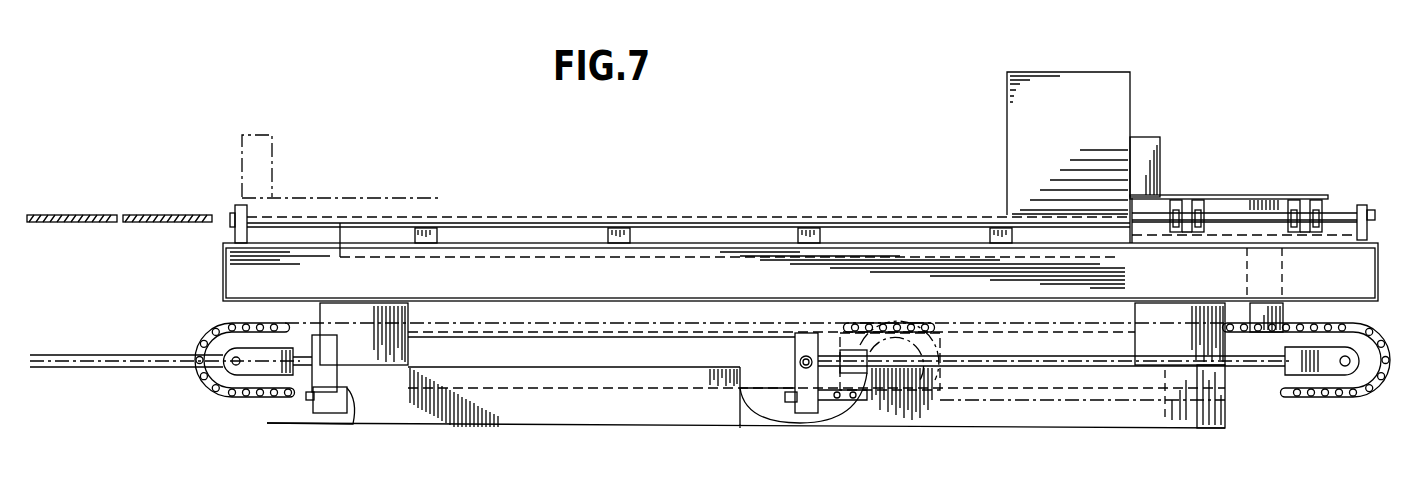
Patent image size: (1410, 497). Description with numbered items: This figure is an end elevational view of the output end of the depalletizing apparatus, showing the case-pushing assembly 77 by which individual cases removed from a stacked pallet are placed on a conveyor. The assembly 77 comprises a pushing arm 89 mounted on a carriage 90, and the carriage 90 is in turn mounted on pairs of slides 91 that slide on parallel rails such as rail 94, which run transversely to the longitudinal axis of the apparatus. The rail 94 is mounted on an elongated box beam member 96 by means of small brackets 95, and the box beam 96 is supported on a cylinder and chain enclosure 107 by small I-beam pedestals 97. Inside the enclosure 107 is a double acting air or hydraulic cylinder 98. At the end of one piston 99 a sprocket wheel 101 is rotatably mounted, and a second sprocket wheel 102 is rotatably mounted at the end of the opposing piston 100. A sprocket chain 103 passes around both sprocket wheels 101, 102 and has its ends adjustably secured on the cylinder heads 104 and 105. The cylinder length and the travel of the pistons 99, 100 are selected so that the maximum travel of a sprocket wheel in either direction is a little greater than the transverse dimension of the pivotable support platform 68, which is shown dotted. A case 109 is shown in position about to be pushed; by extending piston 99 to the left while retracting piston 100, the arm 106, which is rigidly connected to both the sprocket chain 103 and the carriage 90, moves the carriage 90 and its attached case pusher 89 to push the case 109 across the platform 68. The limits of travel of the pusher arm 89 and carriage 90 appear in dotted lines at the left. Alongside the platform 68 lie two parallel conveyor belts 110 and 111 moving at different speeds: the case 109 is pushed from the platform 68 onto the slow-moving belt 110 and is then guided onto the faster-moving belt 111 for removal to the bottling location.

The pivotable support platform 68 is at (480, 265).
The case-pushing assembly 77 is at (621, 433).
The pushing arm 89 is at (272, 183).
The carriage 90 is at (1210, 197).
The slides 91 is at (1330, 206).
The rail 94 is at (860, 215).
The brackets 95 is at (600, 238).
The box beam member 96 is at (685, 242).
The I-beam pedestals 97 is at (408, 357).
The double acting cylinder 98 is at (757, 388).
The piston 99 is at (342, 380).
The opposing piston 100 is at (1278, 373).
The sprocket wheel 101 is at (265, 395).
The second sprocket wheel 102 is at (1315, 392).
The sprocket chain 103 is at (1362, 328).
The cylinder head 104 is at (347, 409).
The cylinder head 105 is at (815, 413).
The arm 106 is at (1283, 312).
The cylinder and chain enclosure 107 is at (507, 428).
The case 109 is at (1006, 117).
The conveyor belt 110 is at (163, 215).
The conveyor belt 111 is at (68, 215).